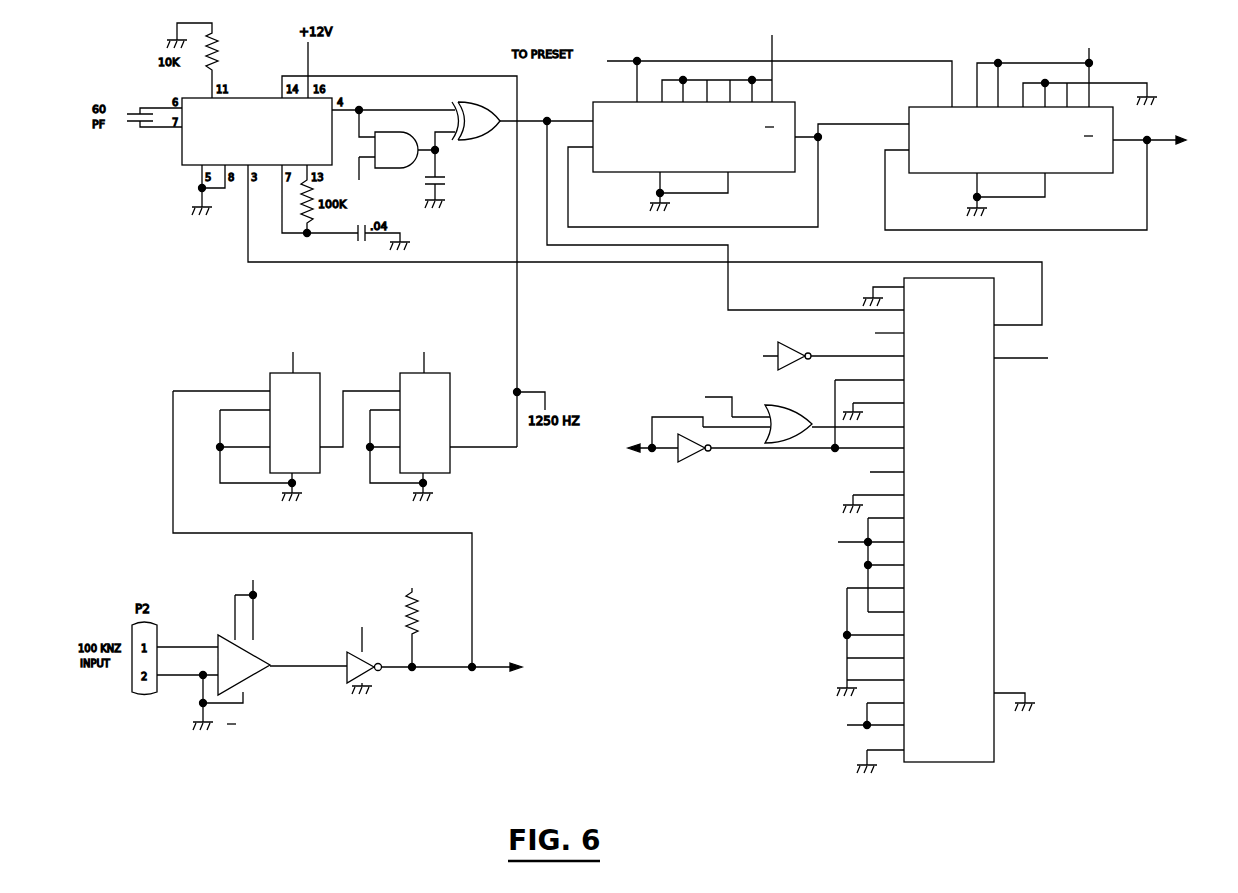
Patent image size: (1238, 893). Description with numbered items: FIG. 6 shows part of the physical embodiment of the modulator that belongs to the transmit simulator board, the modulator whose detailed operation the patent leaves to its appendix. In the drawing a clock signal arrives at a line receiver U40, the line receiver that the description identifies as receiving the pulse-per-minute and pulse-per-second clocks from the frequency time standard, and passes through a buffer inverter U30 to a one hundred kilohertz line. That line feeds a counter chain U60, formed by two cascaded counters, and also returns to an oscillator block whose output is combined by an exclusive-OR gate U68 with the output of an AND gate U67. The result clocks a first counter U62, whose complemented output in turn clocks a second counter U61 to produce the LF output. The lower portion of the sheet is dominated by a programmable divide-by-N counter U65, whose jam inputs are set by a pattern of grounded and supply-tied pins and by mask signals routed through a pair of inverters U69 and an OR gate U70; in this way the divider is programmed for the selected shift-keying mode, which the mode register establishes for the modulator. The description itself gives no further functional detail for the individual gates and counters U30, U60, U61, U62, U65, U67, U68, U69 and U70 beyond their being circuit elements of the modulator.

The SN7406 hex inverter (100 KHz buffer) U30 is at (462, 657).
The line receiver U40 is at (252, 647).
The 4017/4022 counter chain U60 is at (345, 502).
The 4018 counter (LF output) U61 is at (1047, 129).
The 4018 counter U62 is at (738, 121).
The 4059 programmable divide-by-N counter U65 is at (897, 525).
The 4081 AND gate U67 is at (424, 159).
The 4030 exclusive-OR gate U68 is at (518, 113).
The inverters U69 is at (699, 403).
The 4071 OR gate U70 is at (735, 418).